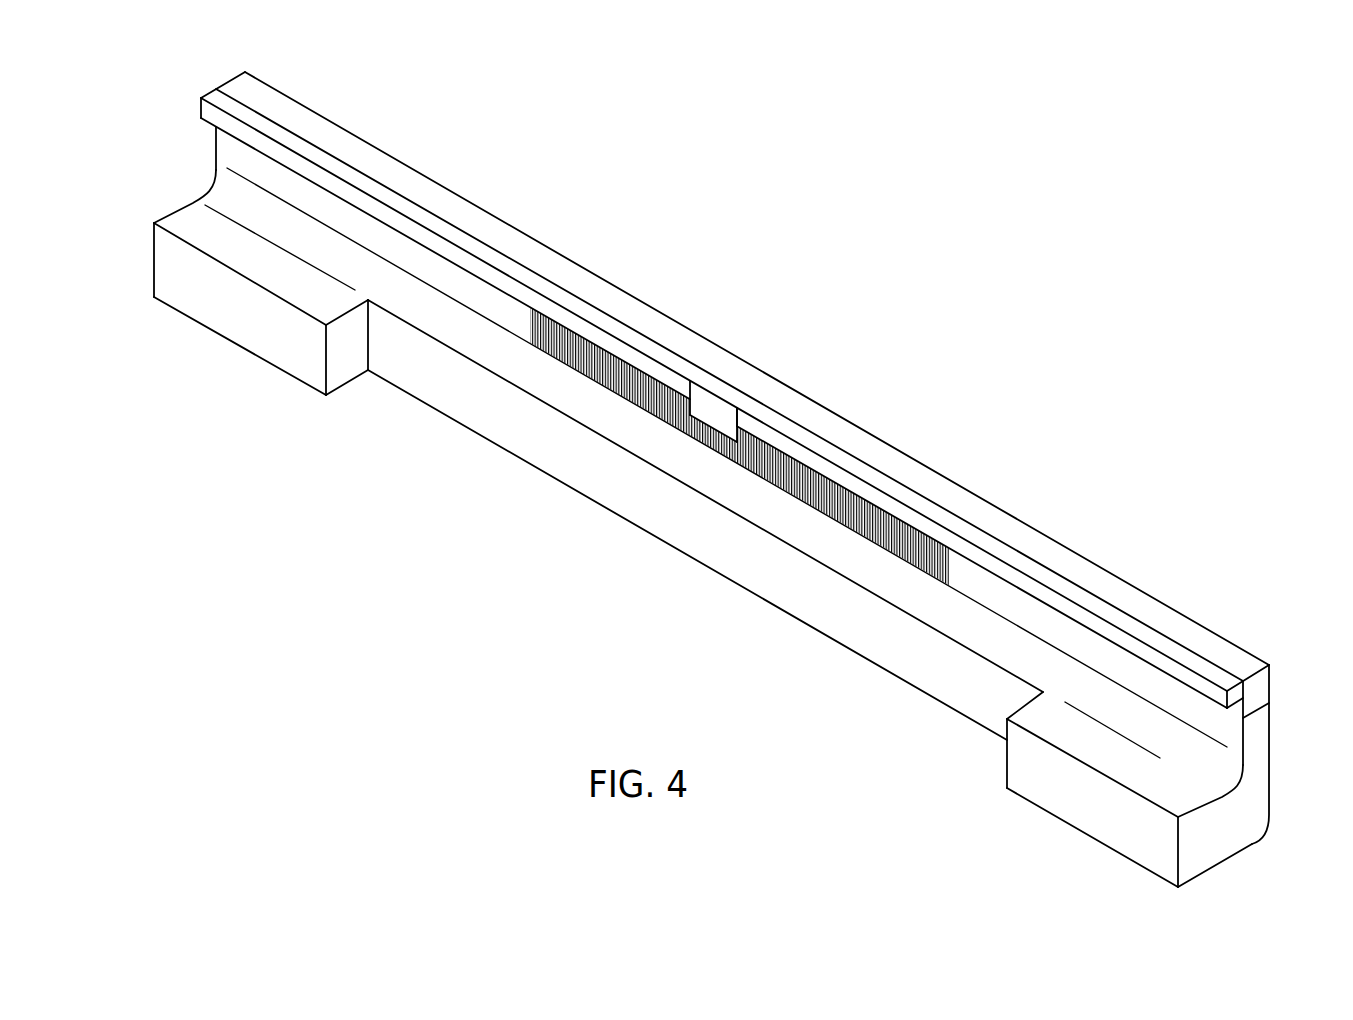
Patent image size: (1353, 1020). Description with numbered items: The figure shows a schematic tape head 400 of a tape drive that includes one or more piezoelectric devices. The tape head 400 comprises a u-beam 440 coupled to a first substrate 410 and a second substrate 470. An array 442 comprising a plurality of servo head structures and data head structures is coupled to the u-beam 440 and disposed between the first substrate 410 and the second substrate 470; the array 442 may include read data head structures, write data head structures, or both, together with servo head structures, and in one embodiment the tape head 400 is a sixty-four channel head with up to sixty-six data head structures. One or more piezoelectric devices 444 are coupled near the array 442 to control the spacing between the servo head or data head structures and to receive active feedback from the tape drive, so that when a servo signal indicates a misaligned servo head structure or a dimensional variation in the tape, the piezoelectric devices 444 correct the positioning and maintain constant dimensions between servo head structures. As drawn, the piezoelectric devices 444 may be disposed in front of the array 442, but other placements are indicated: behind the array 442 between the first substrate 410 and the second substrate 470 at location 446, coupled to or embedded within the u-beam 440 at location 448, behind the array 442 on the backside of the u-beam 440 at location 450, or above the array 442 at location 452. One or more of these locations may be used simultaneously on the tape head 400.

The tape head 400 is at (147, 103).
The first substrate 410 is at (1031, 545).
The u-beam 440 is at (1223, 831).
The array 442 is at (560, 340).
The piezoelectric devices 444 is at (720, 428).
The location 446 is at (692, 382).
The location 448 is at (648, 432).
The location 450 is at (632, 296).
The location 452 is at (745, 410).
The second substrate 470 is at (1160, 662).